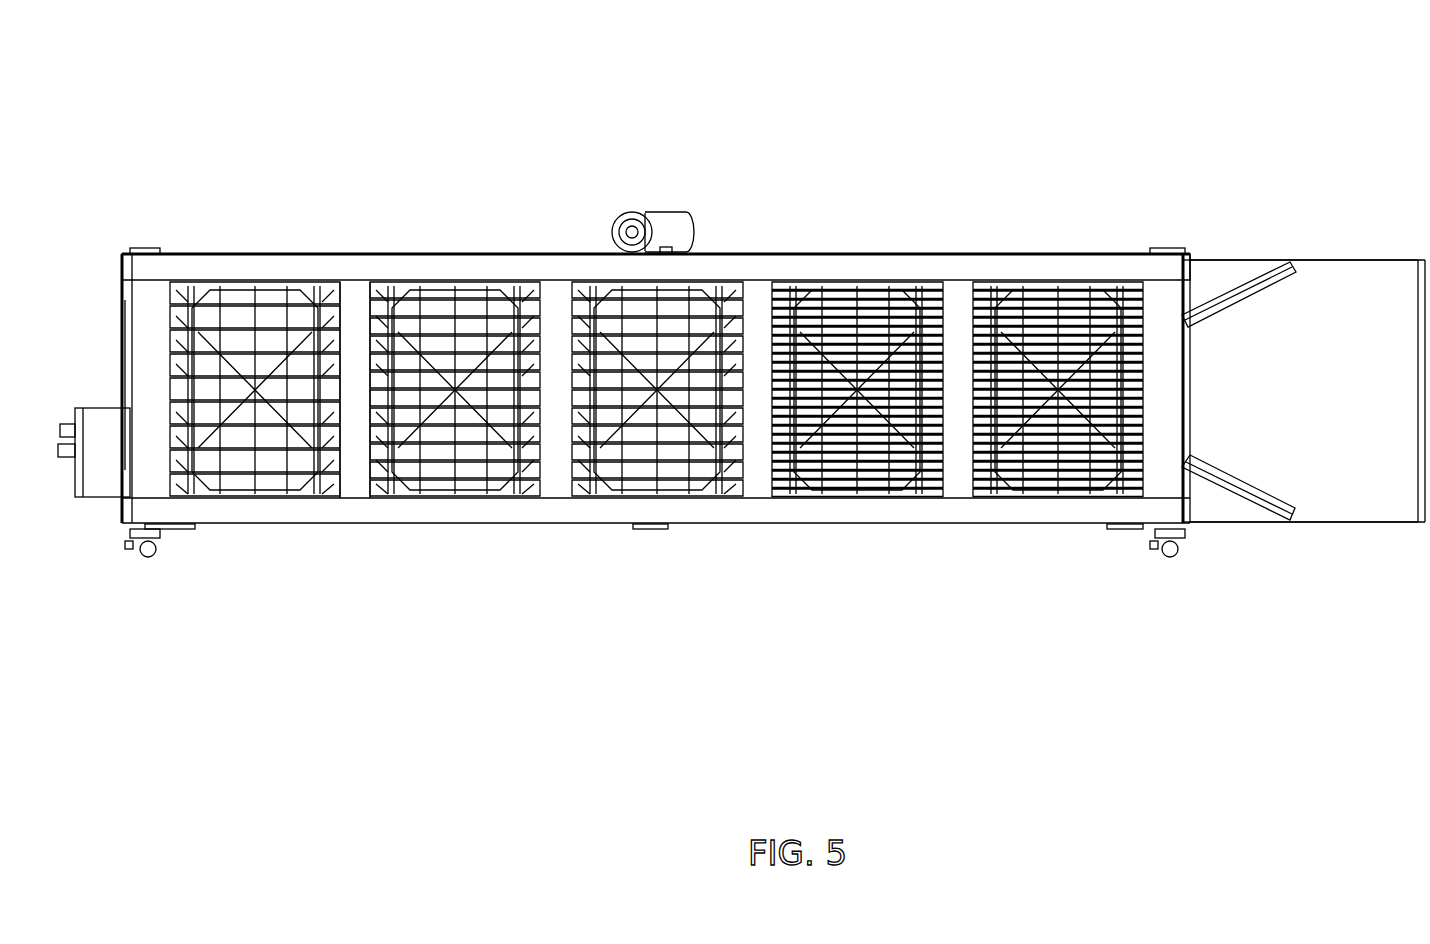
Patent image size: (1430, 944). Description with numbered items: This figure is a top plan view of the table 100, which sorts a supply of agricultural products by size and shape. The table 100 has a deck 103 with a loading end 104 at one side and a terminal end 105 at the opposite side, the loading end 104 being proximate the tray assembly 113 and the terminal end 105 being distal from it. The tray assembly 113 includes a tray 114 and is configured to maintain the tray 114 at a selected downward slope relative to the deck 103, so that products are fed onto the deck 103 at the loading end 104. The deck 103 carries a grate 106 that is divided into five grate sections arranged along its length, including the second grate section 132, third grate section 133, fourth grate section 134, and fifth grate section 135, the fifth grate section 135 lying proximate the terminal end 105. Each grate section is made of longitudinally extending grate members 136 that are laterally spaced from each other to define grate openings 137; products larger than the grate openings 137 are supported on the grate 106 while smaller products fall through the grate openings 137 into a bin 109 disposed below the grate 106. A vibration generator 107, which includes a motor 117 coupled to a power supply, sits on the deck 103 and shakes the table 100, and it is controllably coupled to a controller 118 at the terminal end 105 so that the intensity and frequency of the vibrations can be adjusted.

The table 100 is at (803, 100).
The deck 103 is at (973, 224).
The loading end 104 is at (1192, 389).
The terminal end 105 is at (104, 317).
The grate 106 is at (352, 298).
The vibration generator 107 is at (683, 195).
The bin 109 is at (270, 315).
The tray assembly 113 is at (1344, 540).
The tray 114 is at (1352, 268).
The motor 117 is at (688, 232).
The controller 118 is at (106, 485).
The second grate section 132 is at (845, 300).
The third grate section 133 is at (708, 312).
The fourth grate section 134 is at (474, 315).
The fifth grate section 135 is at (208, 305).
The grate member 136 is at (268, 472).
The grate opening 137 is at (236, 468).